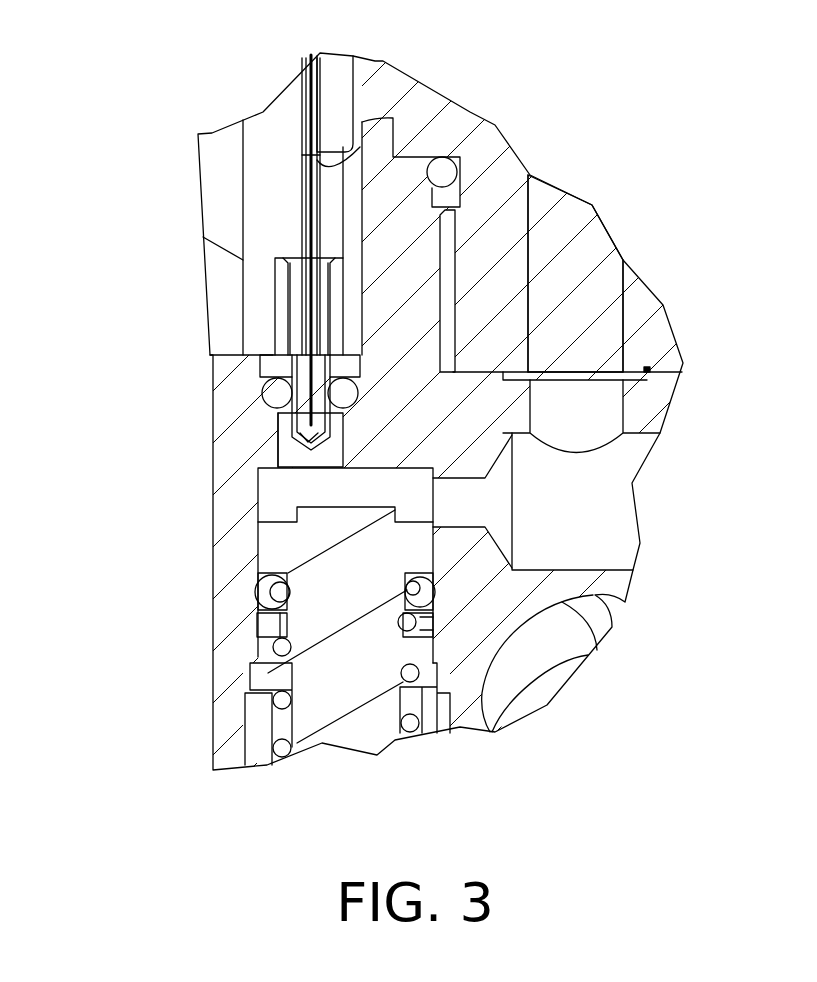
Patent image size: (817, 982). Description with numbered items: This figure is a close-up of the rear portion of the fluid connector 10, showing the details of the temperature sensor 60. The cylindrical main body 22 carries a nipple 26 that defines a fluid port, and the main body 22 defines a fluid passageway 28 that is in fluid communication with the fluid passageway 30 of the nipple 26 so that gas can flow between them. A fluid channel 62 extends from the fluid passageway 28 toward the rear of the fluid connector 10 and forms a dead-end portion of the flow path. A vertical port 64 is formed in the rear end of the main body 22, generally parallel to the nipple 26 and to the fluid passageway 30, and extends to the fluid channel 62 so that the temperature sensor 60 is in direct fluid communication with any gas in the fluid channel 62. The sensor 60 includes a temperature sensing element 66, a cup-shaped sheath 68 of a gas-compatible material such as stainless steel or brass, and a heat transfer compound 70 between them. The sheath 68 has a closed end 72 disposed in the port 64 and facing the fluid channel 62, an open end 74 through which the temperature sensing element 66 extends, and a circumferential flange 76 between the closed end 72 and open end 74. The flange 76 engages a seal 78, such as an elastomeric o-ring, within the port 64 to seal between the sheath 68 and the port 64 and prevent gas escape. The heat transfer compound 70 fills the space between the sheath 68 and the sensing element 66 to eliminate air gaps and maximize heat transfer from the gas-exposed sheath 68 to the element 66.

The fluid connector 10 is at (735, 122).
The main body 22 is at (657, 408).
The nipple 26 is at (642, 315).
The fluid passageway 28 is at (588, 510).
The fluid passageway 30 is at (560, 220).
The temperature sensor 60 is at (262, 434).
The fluid channel 62 is at (273, 505).
The vertical port 64 is at (274, 446).
The temperature sensing element 66 is at (310, 327).
The sheath 68 is at (338, 433).
The heat transfer compound 70 is at (290, 418).
The closed end 72 is at (311, 452).
The open end 74 is at (313, 302).
The circumferential flange 76 is at (272, 367).
The seal 78 is at (348, 391).